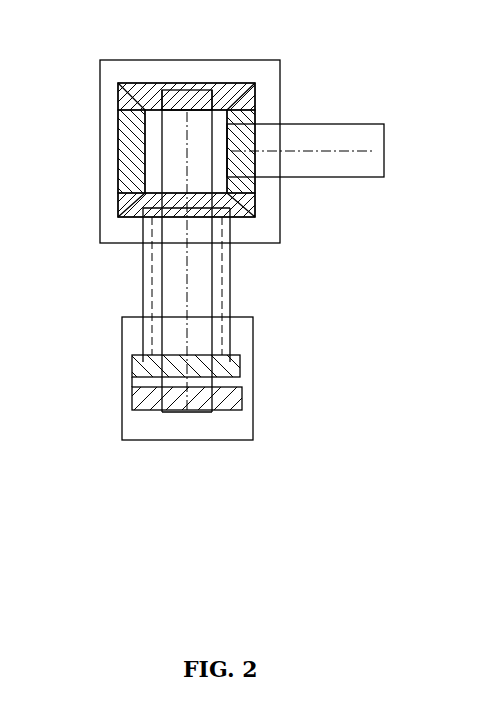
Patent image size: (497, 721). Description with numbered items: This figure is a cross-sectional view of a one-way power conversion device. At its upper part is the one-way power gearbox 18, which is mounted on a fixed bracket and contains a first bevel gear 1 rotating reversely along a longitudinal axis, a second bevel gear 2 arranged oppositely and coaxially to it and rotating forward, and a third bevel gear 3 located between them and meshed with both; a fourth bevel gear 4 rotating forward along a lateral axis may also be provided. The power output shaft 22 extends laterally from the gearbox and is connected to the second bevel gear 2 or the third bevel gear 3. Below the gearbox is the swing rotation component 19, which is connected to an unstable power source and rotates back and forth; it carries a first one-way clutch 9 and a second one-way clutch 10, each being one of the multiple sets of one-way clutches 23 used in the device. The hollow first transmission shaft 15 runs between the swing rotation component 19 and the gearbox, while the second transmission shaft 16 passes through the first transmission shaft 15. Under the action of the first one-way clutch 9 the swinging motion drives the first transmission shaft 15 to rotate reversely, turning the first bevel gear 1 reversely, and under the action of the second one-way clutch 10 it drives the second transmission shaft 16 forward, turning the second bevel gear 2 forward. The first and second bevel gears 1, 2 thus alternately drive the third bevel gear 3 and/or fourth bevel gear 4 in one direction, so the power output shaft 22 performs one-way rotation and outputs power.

The first bevel gear 1 is at (222, 239).
The second bevel gear 2 is at (227, 125).
The third bevel gear 3 is at (287, 132).
The fourth bevel gear 4 is at (97, 136).
The first one-way clutch 9 is at (221, 350).
The second one-way clutch 10 is at (227, 392).
The first transmission shaft 15 is at (146, 285).
The second transmission shaft 16 is at (220, 210).
The one-way power gearbox 18 is at (190, 130).
The swing rotation component 19 is at (230, 391).
The power output shaft 22 is at (333, 140).
The one-way clutch 23 is at (115, 383).